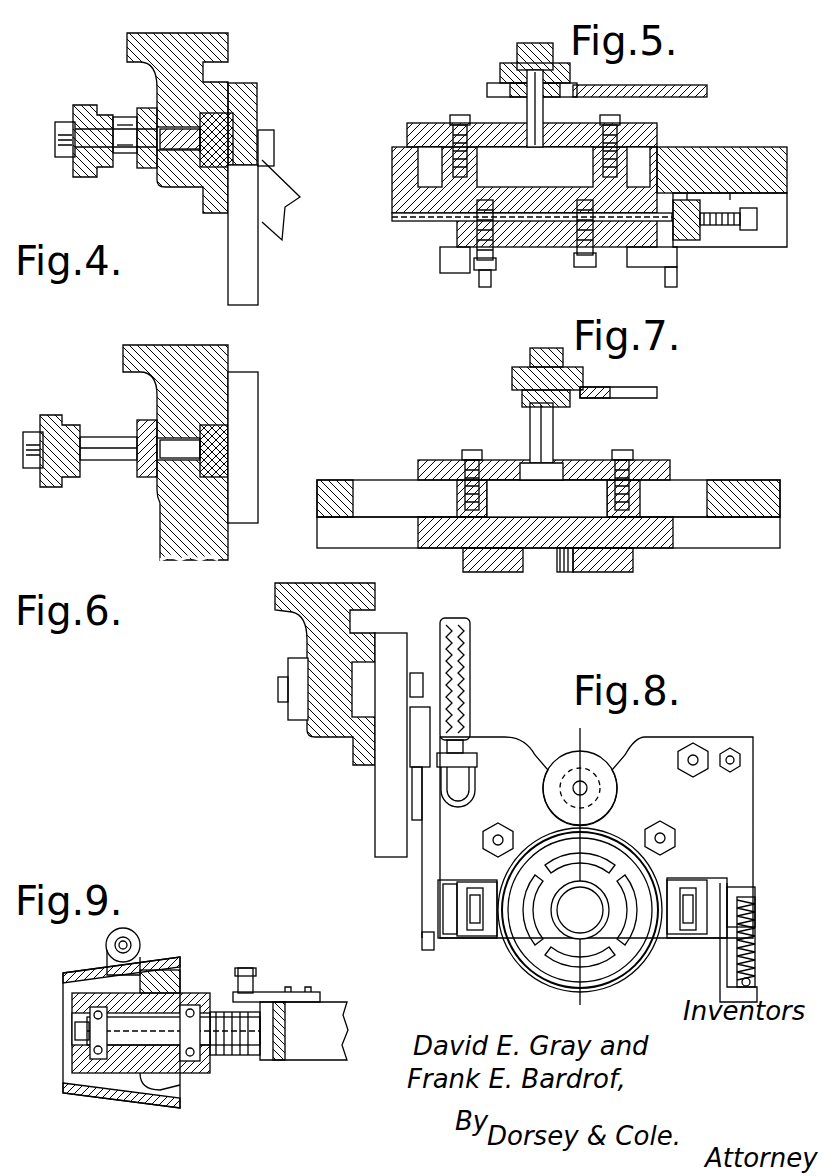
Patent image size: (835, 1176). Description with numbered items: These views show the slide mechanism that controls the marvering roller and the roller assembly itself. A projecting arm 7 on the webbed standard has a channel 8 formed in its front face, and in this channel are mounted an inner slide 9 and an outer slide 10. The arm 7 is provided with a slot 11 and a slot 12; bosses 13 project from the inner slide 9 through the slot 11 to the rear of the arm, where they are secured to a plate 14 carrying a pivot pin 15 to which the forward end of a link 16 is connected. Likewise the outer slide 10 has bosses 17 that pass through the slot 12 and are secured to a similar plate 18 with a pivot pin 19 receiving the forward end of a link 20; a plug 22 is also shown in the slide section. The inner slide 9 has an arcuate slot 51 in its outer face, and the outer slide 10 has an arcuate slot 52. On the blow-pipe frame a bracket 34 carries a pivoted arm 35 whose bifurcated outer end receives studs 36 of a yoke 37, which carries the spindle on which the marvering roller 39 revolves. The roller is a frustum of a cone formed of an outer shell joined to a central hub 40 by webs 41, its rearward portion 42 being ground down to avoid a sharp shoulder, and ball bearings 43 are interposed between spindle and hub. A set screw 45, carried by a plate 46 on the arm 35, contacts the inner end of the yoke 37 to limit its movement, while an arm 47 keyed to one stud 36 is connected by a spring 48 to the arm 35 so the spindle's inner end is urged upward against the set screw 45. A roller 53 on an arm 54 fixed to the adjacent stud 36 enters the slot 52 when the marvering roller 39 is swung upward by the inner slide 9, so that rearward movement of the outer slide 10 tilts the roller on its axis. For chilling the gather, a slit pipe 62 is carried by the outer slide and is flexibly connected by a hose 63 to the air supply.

In FIG. 4, the projecting arm 7 is at (127, 50).
In FIG. 5, the projecting arm 7 is at (757, 150).
In FIG. 6, the projecting arm 7 is at (130, 360).
In FIG. 7, the projecting arm 7 is at (752, 490).
In FIG. 8, the projecting arm 7 is at (307, 640).
In FIG. 4, the channel 8 is at (212, 118).
In FIG. 5, the channel 8 is at (768, 205).
In FIG. 6, the channel 8 is at (218, 437).
In FIG. 7, the channel 8 is at (548, 532).
In FIG. 8, the channel 8 is at (365, 662).
In FIG. 6, the inner slide 9 is at (215, 437).
In FIG. 8, the inner slide 9 is at (580, 868).
In FIG. 4, the outer slide 10 is at (233, 125).
In FIG. 8, the outer slide 10 is at (395, 645).
In FIG. 5, the slot 11 is at (548, 205).
In FIG. 6, the slot 11 is at (172, 455).
In FIG. 7, the slot 11 is at (547, 498).
In FIG. 5, the slot 12 is at (535, 167).
In FIG. 7, the bosses 13 is at (465, 492).
In FIG. 6, the plate 14 is at (140, 470).
In FIG. 7, the plate 14 is at (583, 468).
In FIG. 6, the pivot pin 15 is at (100, 437).
In FIG. 7, the pivot pin 15 is at (530, 430).
In FIG. 6, the link 16 is at (70, 487).
In FIG. 7, the link 16 is at (645, 393).
In FIG. 5, the bosses 17 is at (432, 155).
In FIG. 4, the plate 18 is at (147, 170).
In FIG. 5, the plate 18 is at (525, 122).
In FIG. 4, the pivot pin 19 is at (128, 130).
In FIG. 5, the pivot pin 19 is at (527, 118).
In FIG. 4, the link 20 is at (98, 178).
In FIG. 5, the link 20 is at (700, 97).
In FIG. 4, the plug 22 is at (180, 150).
In FIG. 8, the bracket 34 is at (596, 837).
In FIG. 8, the arm 35 is at (494, 940).
In FIG. 9, the arm 35 is at (304, 1031).
In FIG. 8, the studs 36 is at (470, 906).
In FIG. 8, the yoke 37 is at (472, 930).
In FIG. 9, the yoke 37 is at (232, 1012).
In FIG. 8, the marvering roller 39 is at (655, 872).
In FIG. 9, the marvering roller 39 is at (107, 1103).
In FIG. 8, the central hub 40 is at (582, 902).
In FIG. 8, the webs 41 is at (537, 950).
In FIG. 9, the webs 41 is at (82, 988).
In FIG. 9, the rearward portion 42 is at (165, 1110).
In FIG. 9, the ball bearings 43 is at (88, 1045).
In FIG. 9, the set screw 45 is at (246, 968).
In FIG. 9, the plate 46 is at (290, 995).
In FIG. 8, the arm 47 is at (718, 957).
In FIG. 8, the spring 48 is at (748, 930).
In FIG. 7, the arcuate slot 51 is at (556, 566).
In FIG. 4, the arcuate slot 52 is at (250, 257).
In FIG. 8, the roller 53 is at (416, 798).
In FIG. 9, the roller 53 is at (145, 962).
In FIG. 8, the arm 54 is at (422, 873).
In FIG. 9, the arm 54 is at (110, 945).
In FIG. 8, the pipe 62 is at (466, 788).
In FIG. 8, the hose 63 is at (470, 656).